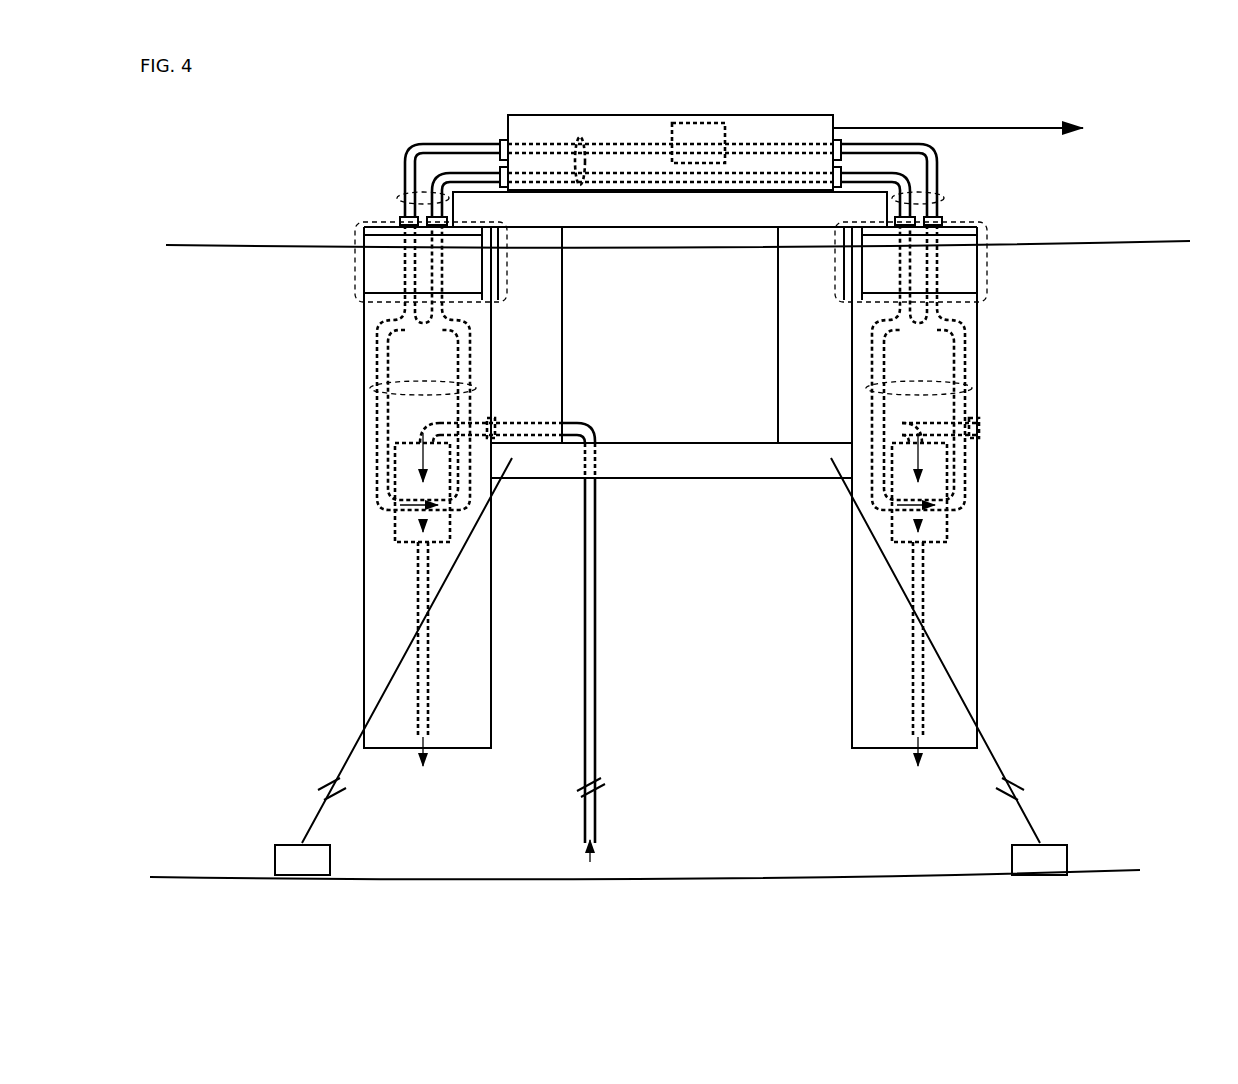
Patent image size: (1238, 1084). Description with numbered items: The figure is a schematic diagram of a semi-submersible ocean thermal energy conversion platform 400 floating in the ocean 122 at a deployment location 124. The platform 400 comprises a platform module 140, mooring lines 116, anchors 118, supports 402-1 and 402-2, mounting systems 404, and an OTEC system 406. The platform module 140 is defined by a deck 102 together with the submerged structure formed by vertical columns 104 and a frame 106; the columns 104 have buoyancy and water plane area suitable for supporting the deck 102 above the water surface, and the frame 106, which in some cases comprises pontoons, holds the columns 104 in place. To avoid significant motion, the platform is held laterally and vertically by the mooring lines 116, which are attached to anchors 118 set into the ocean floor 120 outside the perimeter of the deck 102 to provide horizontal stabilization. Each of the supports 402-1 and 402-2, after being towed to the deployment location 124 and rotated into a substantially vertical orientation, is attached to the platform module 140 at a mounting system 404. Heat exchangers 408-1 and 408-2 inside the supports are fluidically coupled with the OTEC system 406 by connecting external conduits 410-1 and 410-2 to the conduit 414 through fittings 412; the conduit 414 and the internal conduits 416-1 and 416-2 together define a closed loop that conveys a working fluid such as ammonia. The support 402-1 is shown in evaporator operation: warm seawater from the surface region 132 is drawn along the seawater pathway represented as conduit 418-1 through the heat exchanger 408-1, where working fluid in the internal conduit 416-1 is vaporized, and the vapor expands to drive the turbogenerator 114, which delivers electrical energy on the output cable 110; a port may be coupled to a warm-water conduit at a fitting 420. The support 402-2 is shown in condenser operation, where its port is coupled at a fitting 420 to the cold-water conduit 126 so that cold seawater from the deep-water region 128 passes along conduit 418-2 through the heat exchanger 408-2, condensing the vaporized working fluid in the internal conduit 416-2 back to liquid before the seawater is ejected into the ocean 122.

The platform 400 is at (320, 104).
The deck 102 is at (813, 217).
The columns 104 is at (543, 358).
The frame 106 is at (708, 443).
The output cable 110 is at (1052, 126).
The turbogenerator 114 is at (715, 153).
The mooring lines 116 is at (338, 767).
The anchors 118 is at (285, 845).
The ocean floor 120 is at (600, 923).
The ocean 122 is at (255, 291).
The deployment location 124 is at (840, 631).
The cold-water conduit 126 is at (597, 660).
The deep-water region 128 is at (573, 848).
The surface region 132 is at (1227, 308).
The platform module 140 is at (728, 522).
The support 402-1 is at (999, 582).
The support 402-2 is at (342, 582).
The mounting system 404 is at (358, 228).
The OTEC system 406 is at (770, 114).
The heat exchanger 408-1 is at (946, 522).
The heat exchanger 408-2 is at (395, 521).
The external conduit 410-1 is at (945, 197).
The external conduit 410-2 is at (398, 196).
The fittings 412 is at (489, 137).
The conduit 414 is at (580, 138).
The internal conduit 416-1 is at (973, 388).
The internal conduit 416-2 is at (372, 388).
The conduit 418-1 is at (913, 712).
The conduit 418-2 is at (428, 712).
The fitting 420 is at (498, 413).